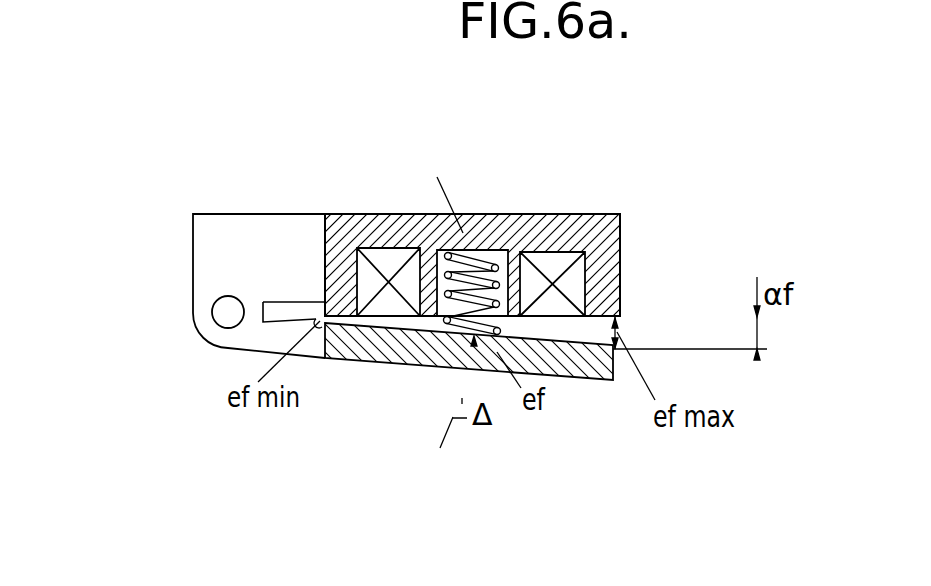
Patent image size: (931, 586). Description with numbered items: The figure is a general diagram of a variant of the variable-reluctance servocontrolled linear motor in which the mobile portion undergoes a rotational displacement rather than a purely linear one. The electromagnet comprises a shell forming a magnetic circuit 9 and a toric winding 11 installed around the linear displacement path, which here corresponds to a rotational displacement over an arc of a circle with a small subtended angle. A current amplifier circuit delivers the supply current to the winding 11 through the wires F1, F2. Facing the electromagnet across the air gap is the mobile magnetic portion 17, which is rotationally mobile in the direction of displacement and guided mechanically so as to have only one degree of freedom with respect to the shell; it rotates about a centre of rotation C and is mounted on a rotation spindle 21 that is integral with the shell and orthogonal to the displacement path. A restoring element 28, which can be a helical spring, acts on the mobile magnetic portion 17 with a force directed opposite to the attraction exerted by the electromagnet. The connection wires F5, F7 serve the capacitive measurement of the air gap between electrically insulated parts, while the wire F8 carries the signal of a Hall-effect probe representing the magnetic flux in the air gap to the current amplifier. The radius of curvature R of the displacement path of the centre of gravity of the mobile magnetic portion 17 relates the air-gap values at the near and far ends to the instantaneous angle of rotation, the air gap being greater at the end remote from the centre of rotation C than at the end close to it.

The magnetic circuit 9 is at (350, 232).
The toric winding 11 is at (393, 265).
The mobile magnetic portion 17 is at (588, 367).
The rotation spindle 21 is at (220, 300).
The restoring element 28 is at (482, 272).
The supply wire F1 is at (585, 252).
The supply wire F2 is at (585, 262).
The connection wire F5 is at (620, 299).
The connection wire F7 is at (600, 364).
The connection wire F8 is at (767, 317).
The centre of rotation C is at (210, 327).
The radius of curvature R is at (228, 312).